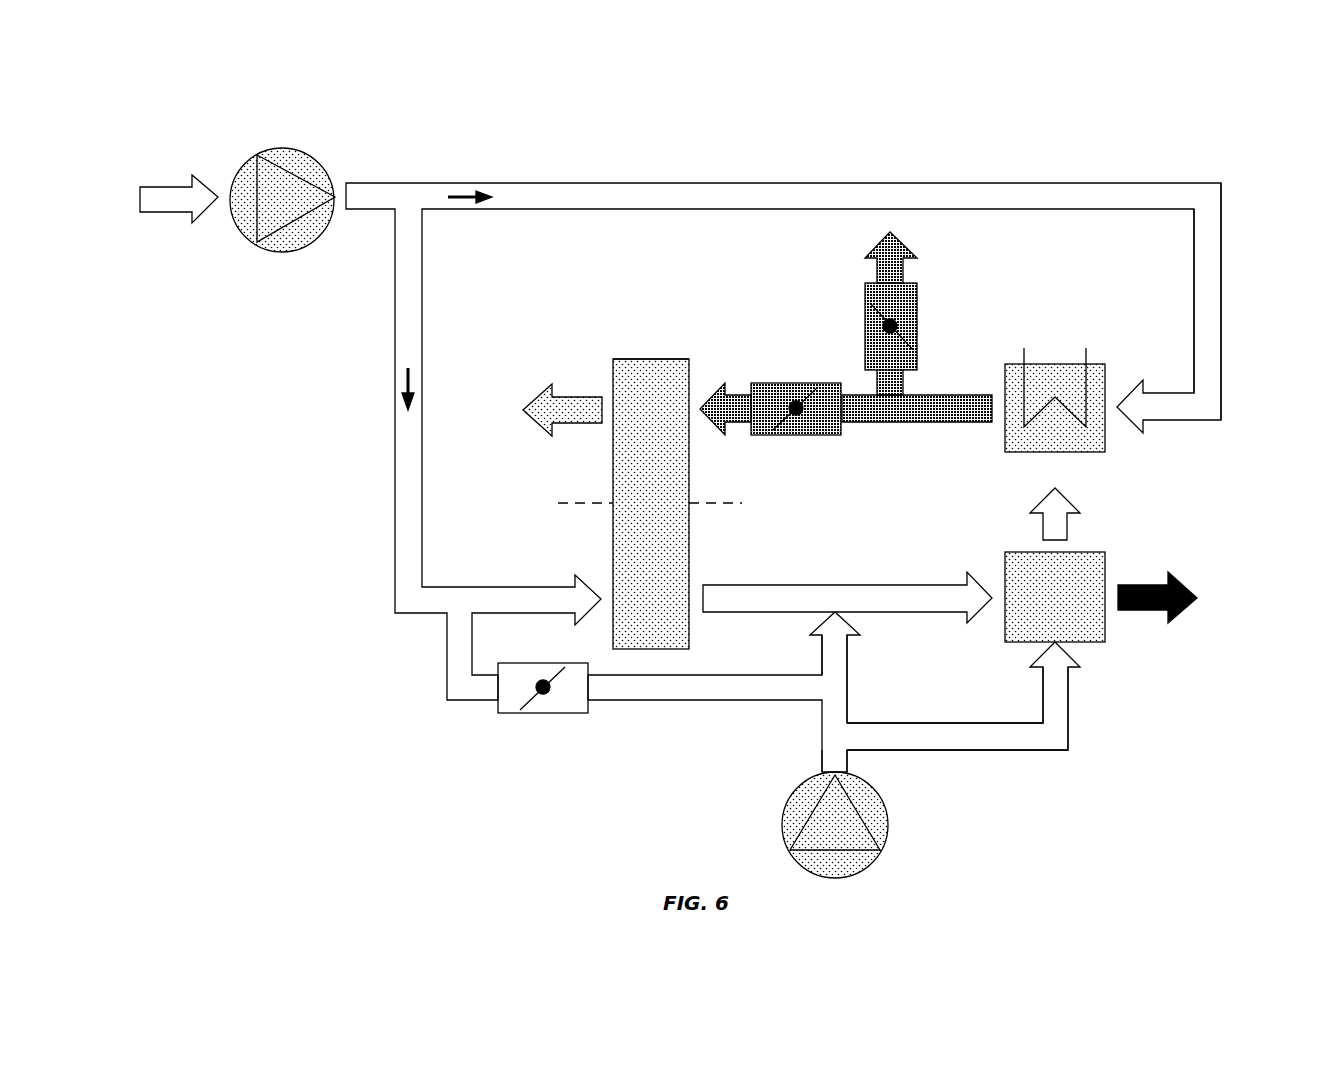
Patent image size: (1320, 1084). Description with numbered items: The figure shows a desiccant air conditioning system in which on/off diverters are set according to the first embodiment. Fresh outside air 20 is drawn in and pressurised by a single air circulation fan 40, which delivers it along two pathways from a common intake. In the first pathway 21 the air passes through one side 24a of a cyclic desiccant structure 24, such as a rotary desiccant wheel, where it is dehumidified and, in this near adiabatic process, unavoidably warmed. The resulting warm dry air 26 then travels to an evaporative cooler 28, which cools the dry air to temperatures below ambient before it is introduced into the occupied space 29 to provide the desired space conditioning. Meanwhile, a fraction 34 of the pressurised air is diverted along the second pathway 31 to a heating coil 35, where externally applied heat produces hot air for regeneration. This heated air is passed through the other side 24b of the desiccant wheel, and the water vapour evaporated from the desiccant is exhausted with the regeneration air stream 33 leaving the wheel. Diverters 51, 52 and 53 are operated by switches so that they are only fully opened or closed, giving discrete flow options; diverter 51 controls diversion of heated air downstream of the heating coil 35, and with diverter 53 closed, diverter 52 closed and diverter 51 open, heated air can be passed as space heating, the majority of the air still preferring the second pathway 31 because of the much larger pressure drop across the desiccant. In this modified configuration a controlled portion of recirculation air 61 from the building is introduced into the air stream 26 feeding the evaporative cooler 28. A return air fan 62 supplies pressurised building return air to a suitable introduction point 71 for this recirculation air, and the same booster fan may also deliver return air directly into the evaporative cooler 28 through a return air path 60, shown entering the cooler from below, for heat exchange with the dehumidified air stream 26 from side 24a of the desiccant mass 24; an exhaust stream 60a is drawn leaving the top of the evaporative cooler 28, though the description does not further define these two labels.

The fresh air 20 is at (162, 185).
The air circulation fan 40 is at (280, 148).
The second pathway 31 is at (458, 183).
The first pathway 21 is at (396, 372).
The fraction of pressurised air 34 is at (1222, 297).
The heating coil 35 is at (1054, 363).
The diverter 51 is at (918, 323).
The diverter 52 is at (796, 436).
The cyclic desiccant structure 24 is at (690, 483).
The one side of desiccant structure 24a is at (690, 640).
The other side of desiccant wheel 24b is at (647, 358).
The regeneration air stream 33 is at (570, 390).
The warm dry air 26 is at (835, 585).
The evaporative cooler 28 is at (1106, 641).
The vent 60a is at (1030, 496).
The occupied space 29 is at (1139, 582).
The return pipe 60 is at (967, 722).
The recirculation air 61 is at (848, 678).
The diverter 53 is at (540, 768).
The introduction point 71 is at (822, 762).
The return air fan 62 is at (782, 823).